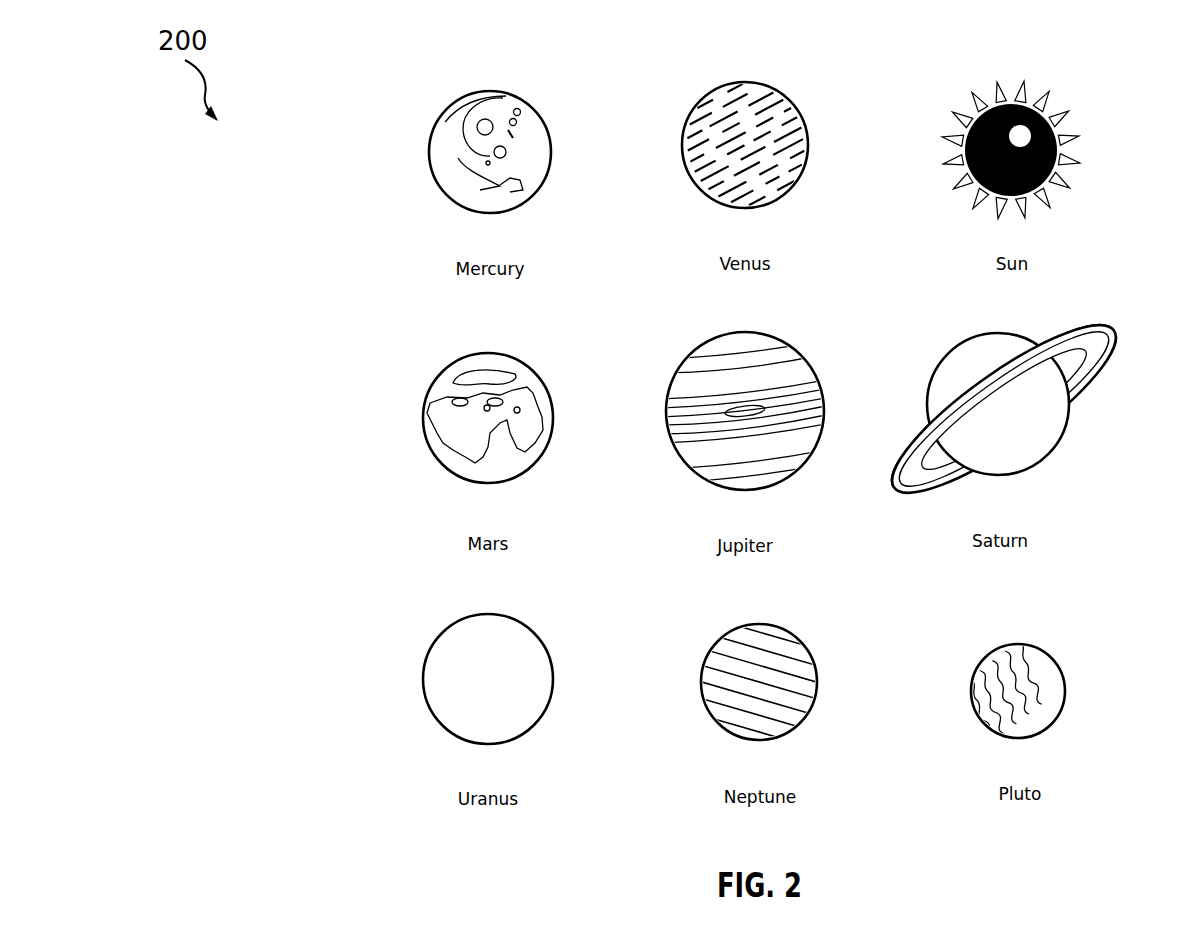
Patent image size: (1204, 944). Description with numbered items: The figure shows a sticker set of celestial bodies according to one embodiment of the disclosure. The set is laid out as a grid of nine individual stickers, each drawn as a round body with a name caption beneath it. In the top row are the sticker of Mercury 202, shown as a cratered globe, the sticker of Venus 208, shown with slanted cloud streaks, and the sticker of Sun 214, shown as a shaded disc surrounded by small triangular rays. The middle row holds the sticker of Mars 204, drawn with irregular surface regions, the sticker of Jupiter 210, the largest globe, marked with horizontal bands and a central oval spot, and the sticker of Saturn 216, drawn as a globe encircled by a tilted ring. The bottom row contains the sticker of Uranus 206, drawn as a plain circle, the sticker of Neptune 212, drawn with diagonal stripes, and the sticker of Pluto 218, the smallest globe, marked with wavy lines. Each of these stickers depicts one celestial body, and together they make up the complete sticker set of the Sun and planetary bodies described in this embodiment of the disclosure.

The sticker of Mercury 202 is at (538, 115).
The sticker of Mars 204 is at (538, 380).
The sticker of Uranus 206 is at (536, 635).
The sticker of Venus 208 is at (800, 115).
The sticker of Jupiter 210 is at (809, 365).
The sticker of Neptune 212 is at (800, 640).
The sticker of Sun 214 is at (1072, 120).
The sticker of Saturn 216 is at (1100, 357).
The sticker of Pluto 218 is at (1062, 676).